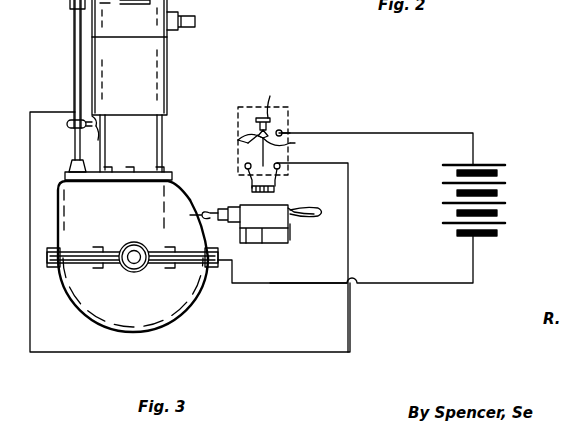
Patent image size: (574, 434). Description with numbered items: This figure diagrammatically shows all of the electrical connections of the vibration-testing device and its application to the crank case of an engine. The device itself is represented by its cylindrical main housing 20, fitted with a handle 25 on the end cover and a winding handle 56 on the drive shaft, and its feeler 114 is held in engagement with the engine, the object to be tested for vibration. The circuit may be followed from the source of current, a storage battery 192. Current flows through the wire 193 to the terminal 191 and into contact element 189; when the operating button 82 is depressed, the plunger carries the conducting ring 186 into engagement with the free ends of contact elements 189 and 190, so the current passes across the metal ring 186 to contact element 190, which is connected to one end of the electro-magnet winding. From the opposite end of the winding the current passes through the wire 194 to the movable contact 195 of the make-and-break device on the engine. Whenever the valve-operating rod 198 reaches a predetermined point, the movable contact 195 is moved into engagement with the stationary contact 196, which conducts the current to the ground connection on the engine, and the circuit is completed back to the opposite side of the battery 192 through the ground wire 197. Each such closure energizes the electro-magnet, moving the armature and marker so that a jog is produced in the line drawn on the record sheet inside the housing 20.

The valve-operating rod 198 is at (74, 56).
The movable contact 195 is at (95, 116).
The stationary contact 196 is at (99, 134).
The feeler 114 is at (200, 214).
The conducting ring 186 is at (255, 134).
The contact element 190 is at (248, 143).
The operating button 82 is at (292, 205).
The terminal 191 is at (283, 130).
The contact element 189 is at (290, 143).
The storage battery 192 is at (277, 166).
The wire 193 is at (402, 133).
The wire 194 is at (350, 232).
The handle 25 is at (300, 220).
The winding handle 56 is at (292, 226).
The main housing 20 is at (280, 246).
The ground wire 197 is at (300, 286).